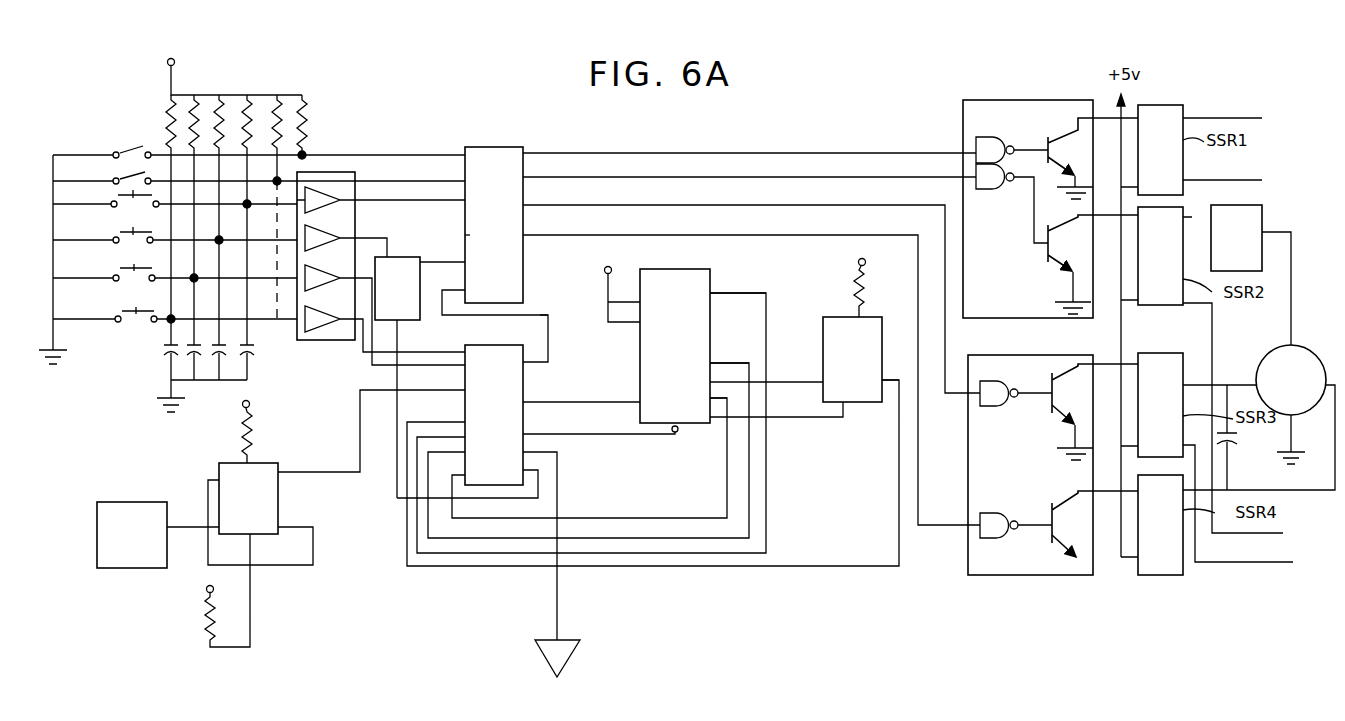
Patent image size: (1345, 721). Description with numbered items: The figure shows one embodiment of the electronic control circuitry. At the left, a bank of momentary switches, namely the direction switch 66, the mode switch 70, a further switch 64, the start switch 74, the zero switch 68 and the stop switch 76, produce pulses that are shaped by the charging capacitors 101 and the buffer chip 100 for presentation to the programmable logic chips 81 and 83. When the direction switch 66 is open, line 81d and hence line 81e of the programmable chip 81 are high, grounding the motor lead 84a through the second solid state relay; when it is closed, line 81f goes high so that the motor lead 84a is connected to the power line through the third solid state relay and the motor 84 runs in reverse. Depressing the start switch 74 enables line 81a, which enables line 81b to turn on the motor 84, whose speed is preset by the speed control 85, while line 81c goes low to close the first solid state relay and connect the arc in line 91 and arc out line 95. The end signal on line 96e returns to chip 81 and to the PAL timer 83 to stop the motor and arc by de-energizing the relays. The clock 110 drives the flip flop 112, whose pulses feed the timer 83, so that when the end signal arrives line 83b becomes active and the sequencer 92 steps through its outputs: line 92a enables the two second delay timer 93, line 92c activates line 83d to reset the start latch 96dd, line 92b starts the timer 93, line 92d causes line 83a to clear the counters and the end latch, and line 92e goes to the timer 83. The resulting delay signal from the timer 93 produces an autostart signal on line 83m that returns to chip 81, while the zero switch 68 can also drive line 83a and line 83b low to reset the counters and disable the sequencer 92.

The direction switch 66 is at (120, 146).
The mode switch 70 is at (119, 175).
The switch 64 is at (115, 198).
The start switch 74 is at (119, 234).
The zero switch 68 is at (120, 270).
The stop switch 76 is at (120, 311).
The charging capacitors 101 is at (173, 236).
The 7407 buffer chip 100 is at (328, 188).
The start latch 96dd is at (387, 368).
The end signal line 96e is at (466, 236).
The 16L8 programmable logic chip 81 is at (503, 158).
The start input line 81a is at (461, 263).
The motor enable line 81b is at (527, 179).
The arc control line 81c is at (527, 152).
The direction input line 81d is at (425, 154).
The forward direction line 81e is at (527, 236).
The reverse direction line 81f is at (527, 207).
The 16R6 PAL timer 83 is at (512, 383).
The autostart line 83m is at (548, 318).
The counter reset line 83a is at (547, 453).
The sequencer control line 83b is at (526, 437).
The start latch reset line 83d is at (540, 483).
The sequencer chip 92 is at (653, 331).
The sequencer enable line 92a is at (843, 418).
The timer start line 92b is at (762, 369).
The start latch reset line 92c is at (727, 478).
The counter clear line 92d is at (744, 366).
The sequencer output line 92e is at (727, 294).
The two second delay timer 93 is at (861, 331).
The clock 110 is at (158, 535).
The flip flop 112 is at (259, 515).
The speed control 85 is at (1236, 238).
The motor 84 is at (1291, 404).
The motor lead 84a is at (1291, 232).
The arc in line 91 is at (1236, 118).
The arc out line 95 is at (1240, 181).